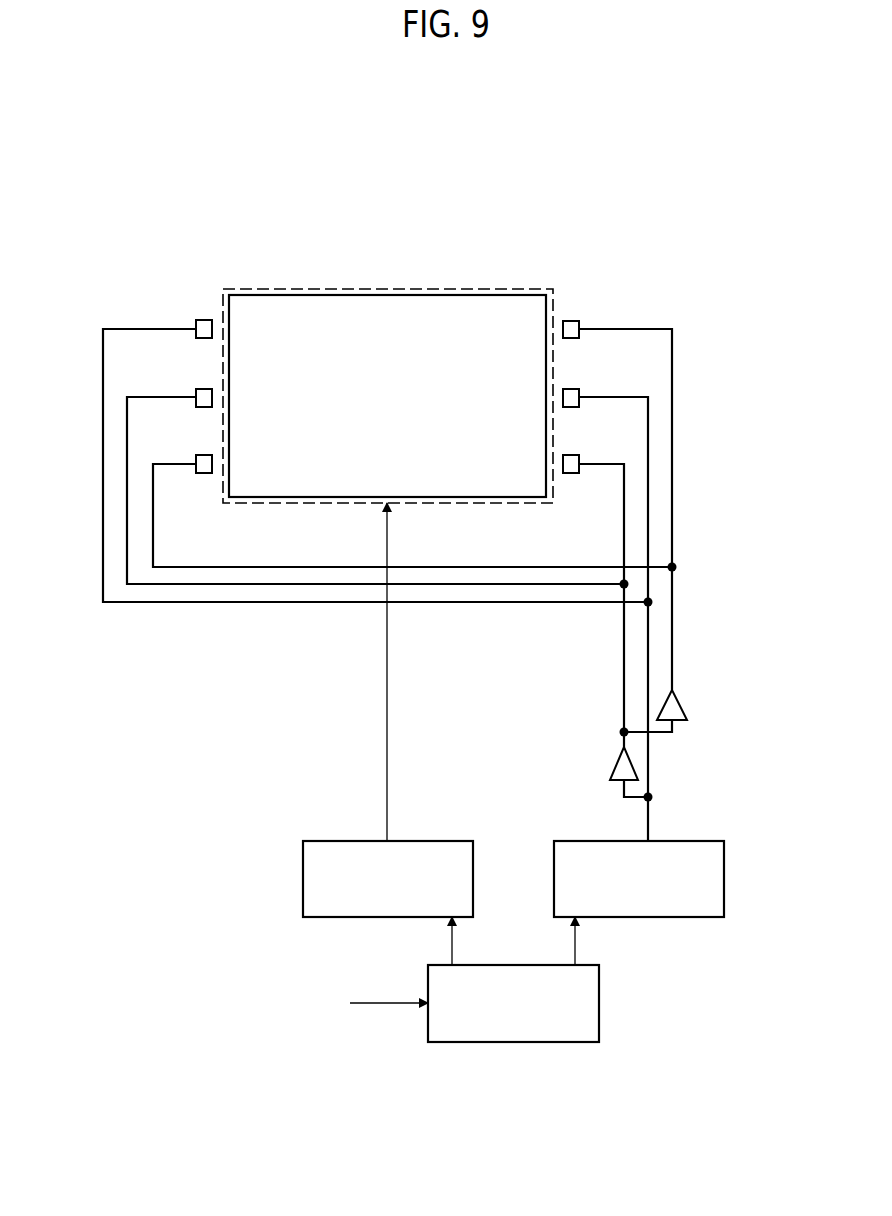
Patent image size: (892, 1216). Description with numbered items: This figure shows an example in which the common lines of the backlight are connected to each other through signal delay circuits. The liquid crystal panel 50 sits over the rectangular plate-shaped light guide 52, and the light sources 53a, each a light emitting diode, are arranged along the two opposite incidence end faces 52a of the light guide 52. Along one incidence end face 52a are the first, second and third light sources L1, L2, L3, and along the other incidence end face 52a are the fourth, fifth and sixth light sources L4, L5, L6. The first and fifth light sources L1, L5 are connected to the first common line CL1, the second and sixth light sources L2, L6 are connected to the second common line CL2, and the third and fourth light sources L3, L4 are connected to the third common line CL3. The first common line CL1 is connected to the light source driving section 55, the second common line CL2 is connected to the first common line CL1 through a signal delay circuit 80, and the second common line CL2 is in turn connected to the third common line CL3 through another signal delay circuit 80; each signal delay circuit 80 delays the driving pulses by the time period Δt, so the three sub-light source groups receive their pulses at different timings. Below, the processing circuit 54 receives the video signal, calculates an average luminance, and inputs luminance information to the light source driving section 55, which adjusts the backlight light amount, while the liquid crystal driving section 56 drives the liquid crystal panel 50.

The liquid crystal panel 50 is at (323, 289).
The light guide 52 is at (437, 289).
The incidence end face 52a is at (222, 493).
The light source 53a is at (212, 329).
The processing circuit 54 is at (601, 1003).
The light source driving section 55 is at (726, 880).
The liquid crystal driving section 56 is at (475, 880).
The signal delay circuit 80 is at (687, 708).
The first common line CL1 is at (648, 627).
The second common line CL2 is at (624, 647).
The third common line CL3 is at (672, 664).
The first light source L1 is at (200, 320).
The second light source L2 is at (200, 389).
The third light source L3 is at (200, 455).
The fourth light source L4 is at (575, 321).
The fifth light source L5 is at (575, 389).
The sixth light source L6 is at (575, 455).